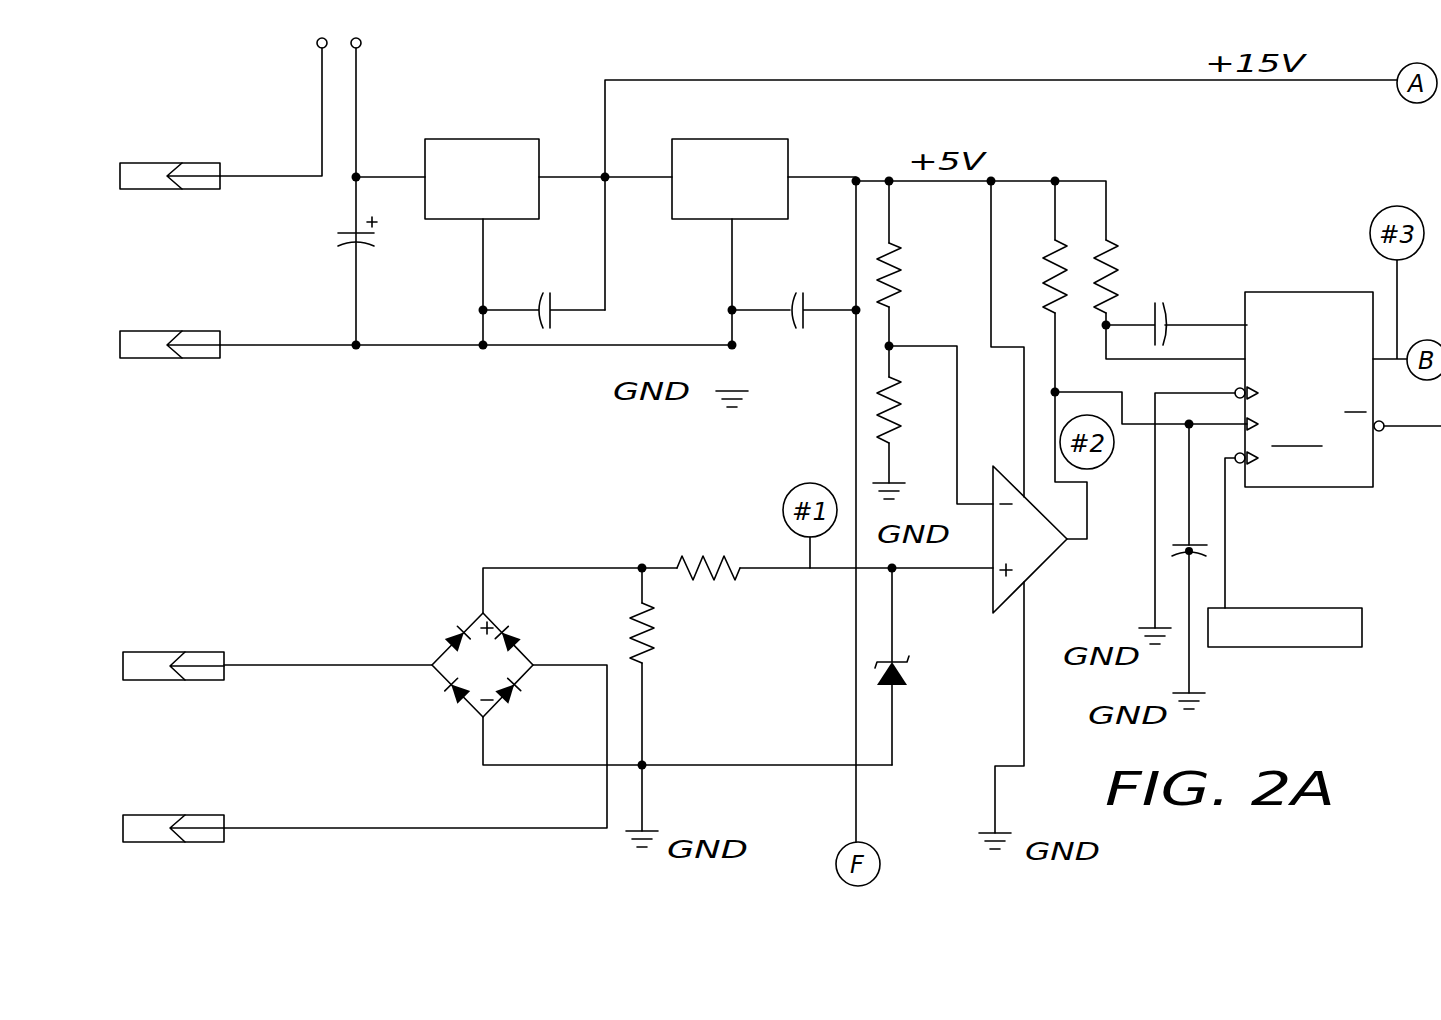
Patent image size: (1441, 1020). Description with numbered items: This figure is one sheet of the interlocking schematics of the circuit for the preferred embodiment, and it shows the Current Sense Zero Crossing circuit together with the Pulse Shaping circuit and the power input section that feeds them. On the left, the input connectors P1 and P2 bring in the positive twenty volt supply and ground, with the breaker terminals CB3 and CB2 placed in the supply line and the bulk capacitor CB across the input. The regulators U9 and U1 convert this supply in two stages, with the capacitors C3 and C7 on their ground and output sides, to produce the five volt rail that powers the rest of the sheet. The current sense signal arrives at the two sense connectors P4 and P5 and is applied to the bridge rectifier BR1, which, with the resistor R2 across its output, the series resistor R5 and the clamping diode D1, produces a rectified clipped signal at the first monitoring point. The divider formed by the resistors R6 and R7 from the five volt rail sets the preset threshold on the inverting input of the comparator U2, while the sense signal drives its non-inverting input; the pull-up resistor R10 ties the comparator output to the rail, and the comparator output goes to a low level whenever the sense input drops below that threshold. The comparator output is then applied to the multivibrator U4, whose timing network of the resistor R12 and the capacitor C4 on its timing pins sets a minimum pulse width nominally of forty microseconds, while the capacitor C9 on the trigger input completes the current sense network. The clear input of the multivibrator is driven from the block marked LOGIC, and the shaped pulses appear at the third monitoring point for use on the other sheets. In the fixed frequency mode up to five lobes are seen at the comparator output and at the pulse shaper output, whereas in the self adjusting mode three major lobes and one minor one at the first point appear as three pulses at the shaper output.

The circuit breaker terminal CB3 is at (268, 41).
The circuit breaker terminal CB2 is at (400, 41).
The +20V input connector P1 is at (214, 162).
The ground connector P2 is at (189, 332).
The current sense connector P4 is at (195, 654).
The current sense connector P5 is at (200, 818).
The voltage regulator U9 is at (486, 183).
The voltage regulator U1 is at (733, 183).
The bulk capacitor CB is at (319, 236).
The capacitor C3 is at (544, 293).
The capacitor C7 is at (794, 293).
The pulse shaping capacitor C4 is at (1176, 294).
The current sense capacitor C9 is at (1197, 516).
The current sense resistor R6 is at (910, 275).
The current sense resistor R7 is at (910, 412).
The current sense resistor R10 is at (1037, 281).
The pulse shaping resistor R12 is at (1125, 278).
The current sense resistor R5 is at (708, 549).
The current sense resistor R2 is at (663, 636).
The bridge rectifier BR1 is at (482, 665).
The diode D1 is at (921, 675).
The comparator U2 is at (1049, 544).
The multivibrator U4 is at (1303, 409).
The logic block LOGIC is at (1285, 627).